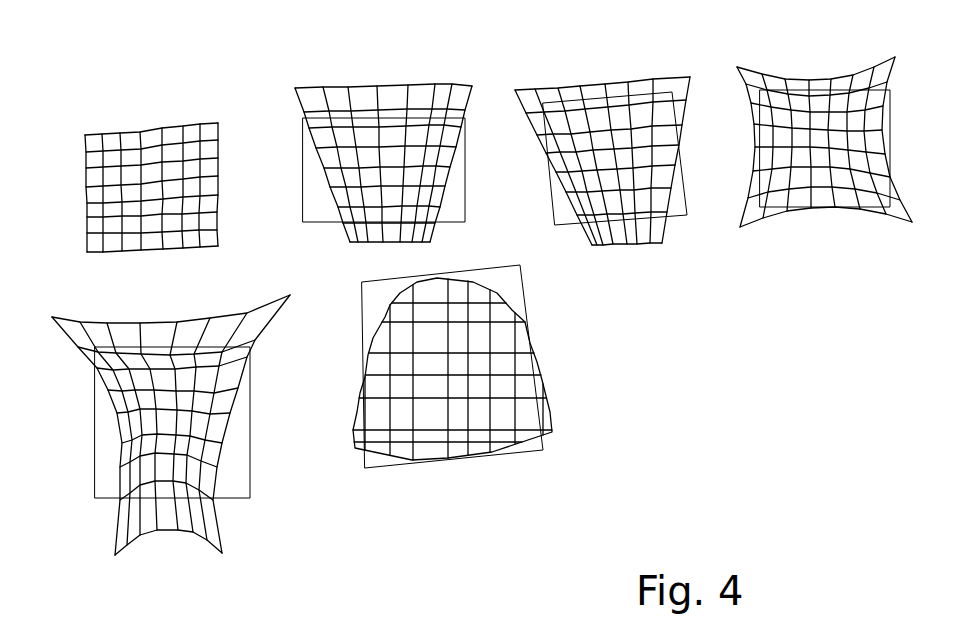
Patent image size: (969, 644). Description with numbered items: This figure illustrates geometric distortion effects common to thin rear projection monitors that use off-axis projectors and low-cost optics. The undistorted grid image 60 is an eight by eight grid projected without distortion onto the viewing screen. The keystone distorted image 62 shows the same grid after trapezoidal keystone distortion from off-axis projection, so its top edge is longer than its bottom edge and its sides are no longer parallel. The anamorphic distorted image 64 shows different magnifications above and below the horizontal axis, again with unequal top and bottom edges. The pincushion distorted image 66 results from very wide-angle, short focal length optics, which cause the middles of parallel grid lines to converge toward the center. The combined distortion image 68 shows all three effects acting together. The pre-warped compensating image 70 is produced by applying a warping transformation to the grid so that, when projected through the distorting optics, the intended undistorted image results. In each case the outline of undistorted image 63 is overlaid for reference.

The undistorted grid image 60 is at (73, 132).
The keystone distorted image 62 is at (315, 83).
The outline of undistorted image 63 is at (298, 185).
The anamorphic distorted image 64 is at (540, 78).
The pincushion distorted image 66 is at (783, 65).
The combined distortion image 68 is at (167, 315).
The pre-warped compensating image 70 is at (557, 360).